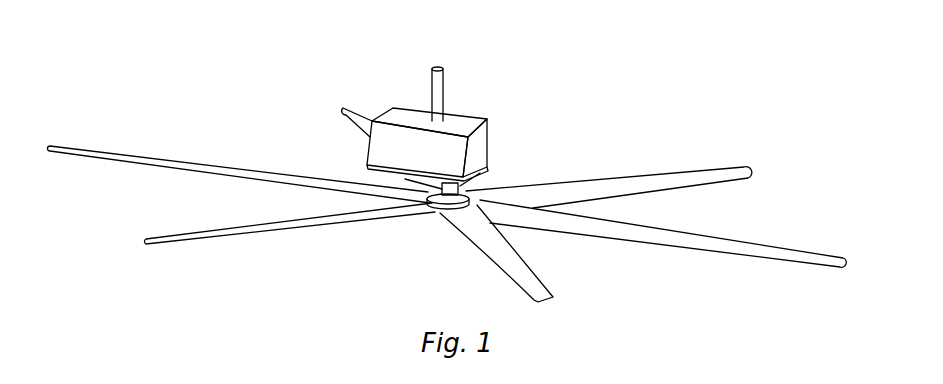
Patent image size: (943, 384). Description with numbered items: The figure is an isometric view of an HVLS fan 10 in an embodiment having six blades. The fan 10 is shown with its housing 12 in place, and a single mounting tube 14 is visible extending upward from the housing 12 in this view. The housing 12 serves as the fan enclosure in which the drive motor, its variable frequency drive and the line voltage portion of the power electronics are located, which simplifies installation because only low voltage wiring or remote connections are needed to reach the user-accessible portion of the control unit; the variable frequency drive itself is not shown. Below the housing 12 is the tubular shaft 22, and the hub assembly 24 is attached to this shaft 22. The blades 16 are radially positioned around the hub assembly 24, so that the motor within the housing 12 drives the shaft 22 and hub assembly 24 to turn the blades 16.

The fan 10 is at (283, 104).
The housing 12 is at (465, 125).
The mounting tube 14 is at (441, 78).
The blades 16 is at (357, 113).
The tubular shaft 22 is at (433, 213).
The hub assembly 24 is at (438, 212).